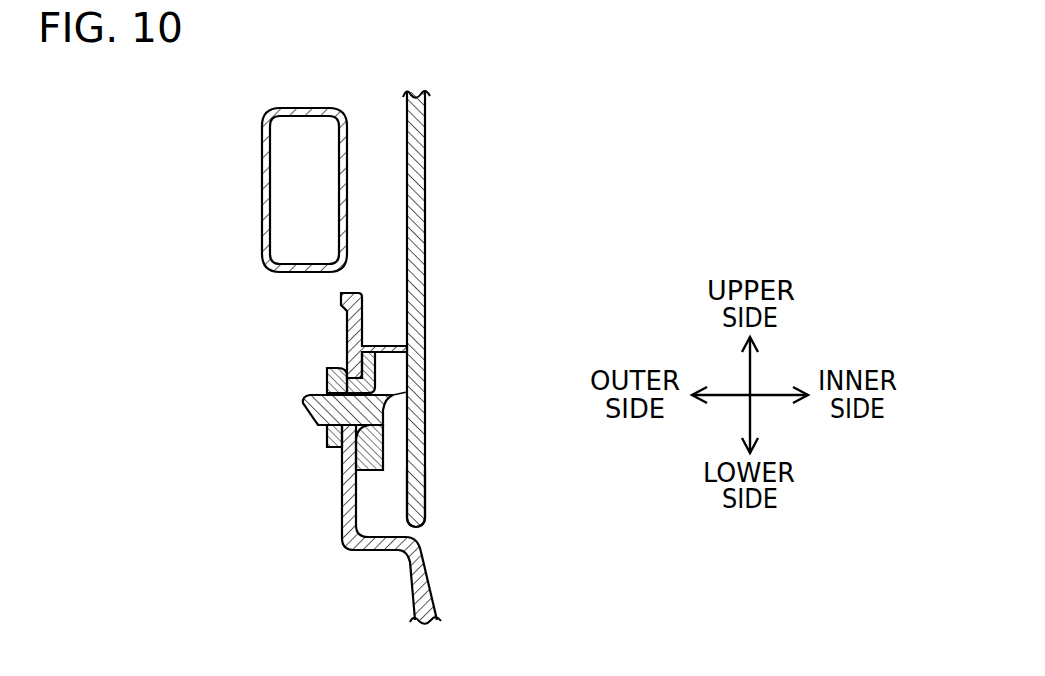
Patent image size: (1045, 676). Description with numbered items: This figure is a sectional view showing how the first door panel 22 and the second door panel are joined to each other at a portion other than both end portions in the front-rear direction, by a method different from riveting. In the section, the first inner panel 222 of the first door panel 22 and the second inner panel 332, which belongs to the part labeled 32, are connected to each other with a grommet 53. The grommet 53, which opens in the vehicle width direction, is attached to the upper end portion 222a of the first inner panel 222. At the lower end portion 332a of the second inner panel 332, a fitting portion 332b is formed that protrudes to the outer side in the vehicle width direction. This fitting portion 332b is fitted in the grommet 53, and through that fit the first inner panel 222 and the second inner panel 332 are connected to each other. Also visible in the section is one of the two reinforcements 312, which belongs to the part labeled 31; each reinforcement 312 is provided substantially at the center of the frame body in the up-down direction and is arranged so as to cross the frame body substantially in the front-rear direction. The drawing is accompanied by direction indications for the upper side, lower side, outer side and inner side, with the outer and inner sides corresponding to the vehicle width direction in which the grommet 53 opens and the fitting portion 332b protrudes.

The pipe 31 is at (217, 190).
The reinforcement 312 is at (262, 165).
The frame 32 is at (509, 309).
The second inner panel 332 is at (425, 157).
The lower end portion 332a is at (425, 483).
The fitting portion 332b is at (303, 411).
The first door panel 22 is at (481, 524).
The first inner panel 222 is at (430, 581).
The upper end portion 222a is at (362, 317).
The grommet 53 is at (327, 373).